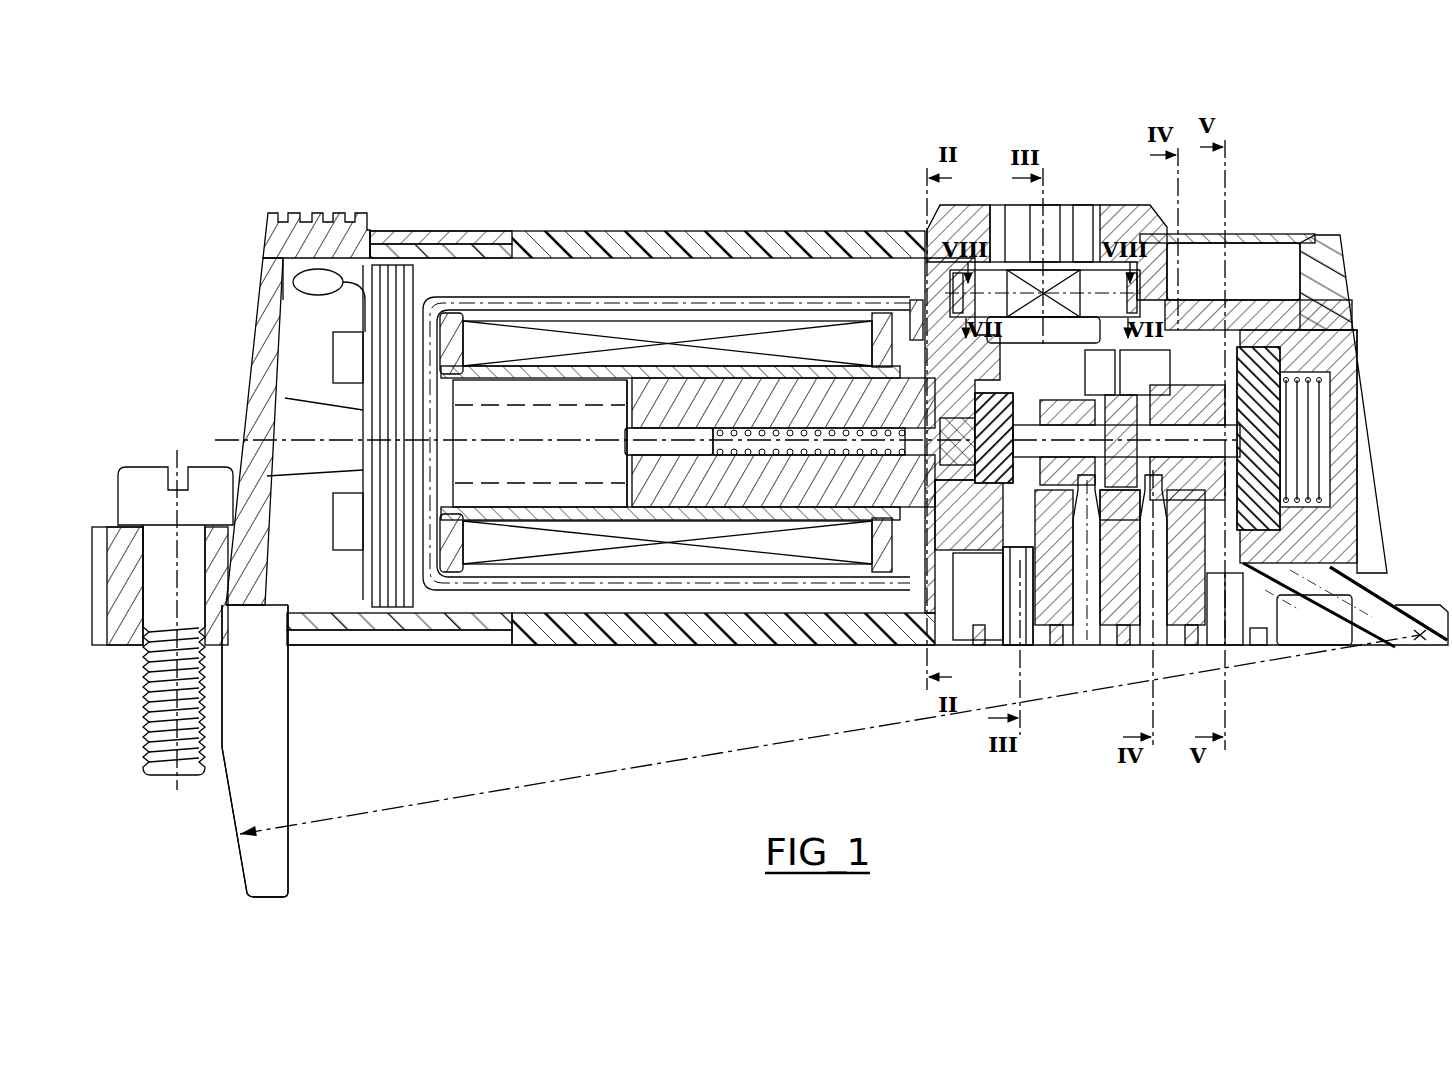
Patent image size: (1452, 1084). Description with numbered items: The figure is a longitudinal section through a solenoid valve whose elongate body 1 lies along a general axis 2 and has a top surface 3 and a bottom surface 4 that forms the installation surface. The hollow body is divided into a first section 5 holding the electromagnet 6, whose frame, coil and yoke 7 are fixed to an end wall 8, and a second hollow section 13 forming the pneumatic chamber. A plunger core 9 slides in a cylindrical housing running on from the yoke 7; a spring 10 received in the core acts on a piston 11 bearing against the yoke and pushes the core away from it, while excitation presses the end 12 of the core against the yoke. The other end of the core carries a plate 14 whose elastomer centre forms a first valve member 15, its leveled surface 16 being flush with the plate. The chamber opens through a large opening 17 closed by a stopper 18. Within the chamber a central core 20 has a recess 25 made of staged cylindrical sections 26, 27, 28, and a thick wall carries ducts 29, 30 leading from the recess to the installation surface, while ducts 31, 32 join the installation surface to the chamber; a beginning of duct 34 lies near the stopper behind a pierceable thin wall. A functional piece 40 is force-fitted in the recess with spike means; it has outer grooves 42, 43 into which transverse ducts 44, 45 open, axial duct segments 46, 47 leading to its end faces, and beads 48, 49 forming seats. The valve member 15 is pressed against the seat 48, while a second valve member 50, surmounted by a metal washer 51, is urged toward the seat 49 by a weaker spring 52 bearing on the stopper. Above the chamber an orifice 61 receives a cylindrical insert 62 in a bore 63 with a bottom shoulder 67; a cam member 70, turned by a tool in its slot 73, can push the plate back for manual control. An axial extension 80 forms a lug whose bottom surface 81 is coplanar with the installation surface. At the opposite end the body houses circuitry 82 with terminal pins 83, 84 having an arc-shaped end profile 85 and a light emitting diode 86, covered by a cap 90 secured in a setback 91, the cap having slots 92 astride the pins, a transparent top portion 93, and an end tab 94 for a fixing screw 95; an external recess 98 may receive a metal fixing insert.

The body 1 is at (742, 246).
The axis 2 is at (485, 438).
The top surface 3 is at (822, 236).
The bottom surface 4 is at (714, 647).
The first section 5 is at (749, 292).
The electromagnet 6 is at (581, 280).
The yoke 7 is at (558, 387).
The end wall 8 is at (903, 355).
The plunger core 9 is at (687, 390).
The spring 10 is at (774, 430).
The piston 11 is at (658, 437).
The end of plunger core 12 is at (628, 472).
The second hollow section 13 is at (1222, 237).
The plate 14 is at (978, 596).
The first valve member 15 is at (925, 555).
The surface of valve member 16 is at (953, 575).
The opening 17 is at (1353, 330).
The stopper 18 is at (1340, 407).
The central core 20 is at (1145, 365).
The central recess 25 is at (1043, 347).
The cylindrical section 26 is at (1066, 470).
The cylindrical section 27 is at (1120, 519).
The cylindrical section 28 is at (1187, 465).
The duct 29 is at (1097, 622).
The duct 30 is at (1158, 622).
The duct 31 is at (1012, 640).
The duct 32 is at (1018, 596).
The beginning of duct 34 is at (1235, 597).
The functional piece 40 is at (1120, 441).
The outer groove 42 is at (1087, 560).
The outer groove 43 is at (1154, 560).
The transverse duct 44 is at (1095, 400).
The transverse duct 45 is at (1150, 420).
The axial duct segment 46 is at (1000, 480).
The axial duct segment 47 is at (1126, 444).
The bead 48 is at (927, 407).
The bead 49 is at (1283, 438).
The second valve member 50 is at (1283, 565).
The metal washer 51 is at (1193, 370).
The spring 52 is at (1313, 473).
The orifice 61 is at (923, 243).
The cylindrical insert 62 is at (1117, 227).
The cylindrical bore 63 is at (997, 270).
The bottom shoulder 67 is at (1075, 262).
The cam member 70 is at (1000, 227).
The slot 73 is at (1053, 227).
The axial extension 80 is at (1440, 647).
The bottom surface of lug 81 is at (1397, 648).
The electrical or electronic circuitry 82 is at (380, 352).
The pin 83 is at (262, 737).
The pin 84 is at (255, 751).
The end profile 85 is at (232, 809).
The light emitting diode 86 is at (306, 279).
The cap 90 is at (268, 296).
The setback 91 is at (455, 250).
The slot 92 is at (451, 638).
The transparent top portion 93 is at (323, 240).
The end tab 94 is at (125, 647).
The fixing screw 95 is at (143, 478).
The recess 98 is at (1335, 615).